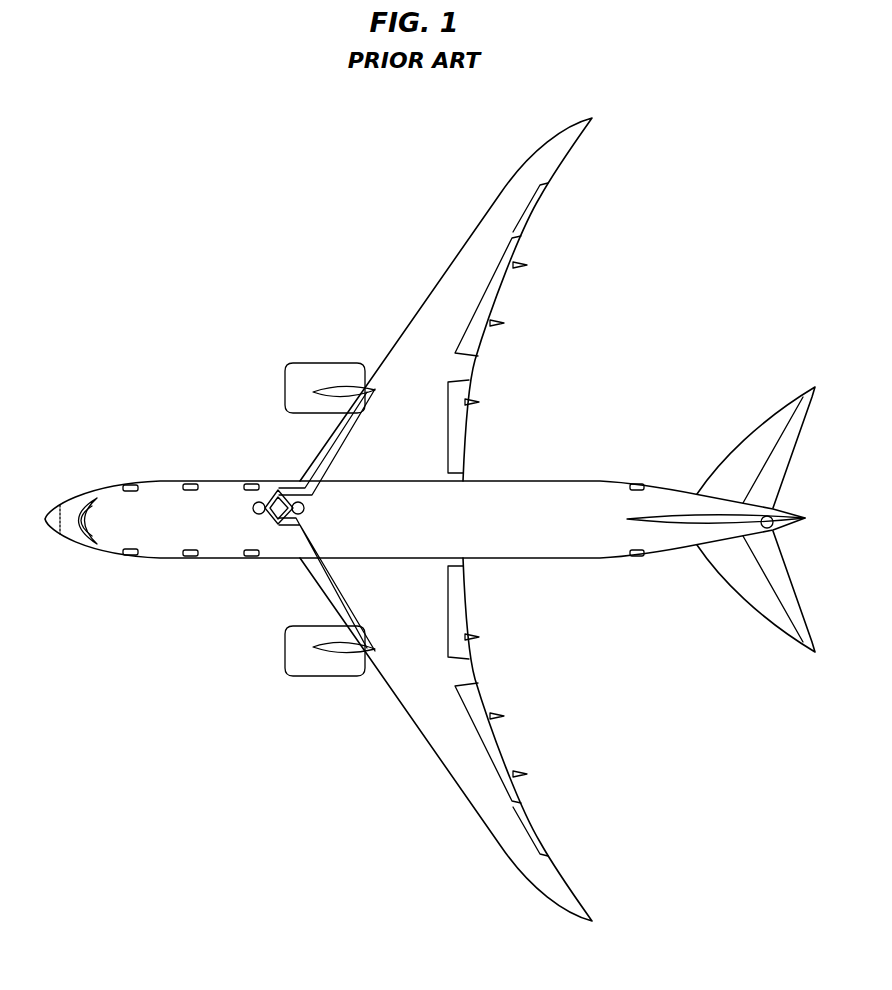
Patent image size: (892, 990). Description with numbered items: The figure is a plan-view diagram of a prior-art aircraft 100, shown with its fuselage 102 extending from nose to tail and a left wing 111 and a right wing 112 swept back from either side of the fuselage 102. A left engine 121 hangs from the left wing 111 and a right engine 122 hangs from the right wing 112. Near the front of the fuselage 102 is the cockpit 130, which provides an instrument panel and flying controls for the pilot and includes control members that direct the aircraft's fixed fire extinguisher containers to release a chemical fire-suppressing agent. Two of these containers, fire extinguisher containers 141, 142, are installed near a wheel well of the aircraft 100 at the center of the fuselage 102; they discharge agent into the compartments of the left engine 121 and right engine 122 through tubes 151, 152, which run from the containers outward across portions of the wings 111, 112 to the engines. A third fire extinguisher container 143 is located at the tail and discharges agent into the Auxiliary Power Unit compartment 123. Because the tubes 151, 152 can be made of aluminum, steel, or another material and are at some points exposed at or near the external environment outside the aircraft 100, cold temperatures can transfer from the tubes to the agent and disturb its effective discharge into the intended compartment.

The aircraft 100 is at (741, 784).
The fuselage 102 is at (578, 481).
The left wing 111 is at (468, 800).
The right wing 112 is at (466, 241).
The left engine 121 is at (302, 680).
The right engine 122 is at (313, 363).
The Auxiliary Power Unit (APU) compartment 123 is at (758, 532).
The cockpit 130 is at (98, 507).
The fire extinguisher container 141 is at (253, 509).
The fire extinguisher container 142 is at (304, 508).
The third fire extinguisher container 143 is at (772, 517).
The tube 151 is at (330, 592).
The tube 152 is at (343, 446).